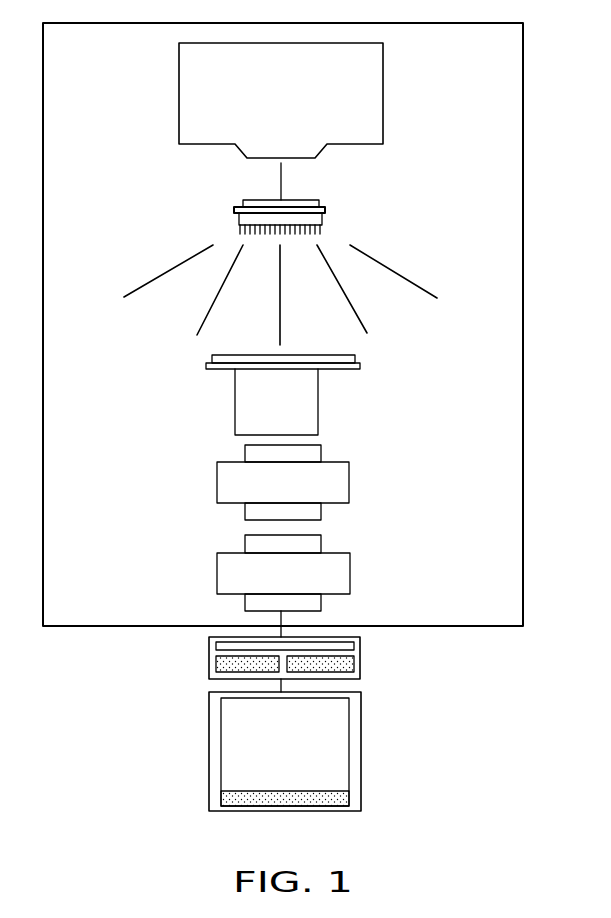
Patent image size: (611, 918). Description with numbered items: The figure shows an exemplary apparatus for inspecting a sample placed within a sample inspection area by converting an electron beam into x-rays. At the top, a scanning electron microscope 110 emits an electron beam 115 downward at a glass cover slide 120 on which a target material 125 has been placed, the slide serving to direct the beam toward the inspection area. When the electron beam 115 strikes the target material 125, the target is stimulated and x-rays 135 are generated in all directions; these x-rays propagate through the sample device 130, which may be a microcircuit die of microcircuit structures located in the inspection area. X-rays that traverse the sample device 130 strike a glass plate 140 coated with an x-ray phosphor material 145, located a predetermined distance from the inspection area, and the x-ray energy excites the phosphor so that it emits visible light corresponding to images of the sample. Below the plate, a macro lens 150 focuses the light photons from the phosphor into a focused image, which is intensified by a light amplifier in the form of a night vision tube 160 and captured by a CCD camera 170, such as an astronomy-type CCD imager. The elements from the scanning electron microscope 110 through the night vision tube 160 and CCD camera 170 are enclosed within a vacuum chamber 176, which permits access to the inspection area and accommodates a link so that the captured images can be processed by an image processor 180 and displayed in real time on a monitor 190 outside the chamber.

The scanning electron microscope 110 is at (383, 99).
The electron beam 115 is at (283, 183).
The glass cover slide 120 is at (326, 212).
The target material 125 is at (321, 207).
The sample device 130 is at (323, 216).
The x-rays 135 is at (418, 287).
The glass plate 140 is at (360, 365).
The x-ray phosphor material 145 is at (355, 357).
The macro lens 150 is at (318, 407).
The night vision tube 160 is at (349, 483).
The CCD camera 170 is at (350, 577).
The vacuum chamber 176 is at (523, 585).
The image processor 180 is at (360, 665).
The monitor 190 is at (361, 740).